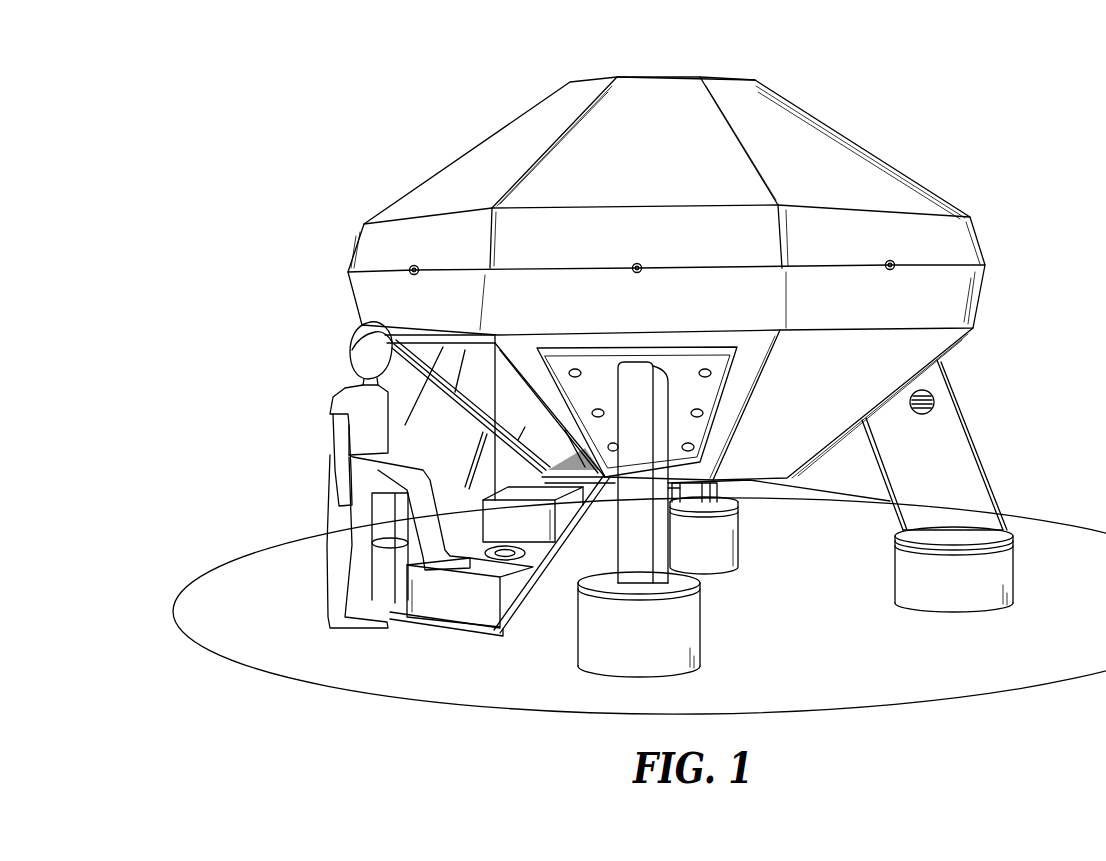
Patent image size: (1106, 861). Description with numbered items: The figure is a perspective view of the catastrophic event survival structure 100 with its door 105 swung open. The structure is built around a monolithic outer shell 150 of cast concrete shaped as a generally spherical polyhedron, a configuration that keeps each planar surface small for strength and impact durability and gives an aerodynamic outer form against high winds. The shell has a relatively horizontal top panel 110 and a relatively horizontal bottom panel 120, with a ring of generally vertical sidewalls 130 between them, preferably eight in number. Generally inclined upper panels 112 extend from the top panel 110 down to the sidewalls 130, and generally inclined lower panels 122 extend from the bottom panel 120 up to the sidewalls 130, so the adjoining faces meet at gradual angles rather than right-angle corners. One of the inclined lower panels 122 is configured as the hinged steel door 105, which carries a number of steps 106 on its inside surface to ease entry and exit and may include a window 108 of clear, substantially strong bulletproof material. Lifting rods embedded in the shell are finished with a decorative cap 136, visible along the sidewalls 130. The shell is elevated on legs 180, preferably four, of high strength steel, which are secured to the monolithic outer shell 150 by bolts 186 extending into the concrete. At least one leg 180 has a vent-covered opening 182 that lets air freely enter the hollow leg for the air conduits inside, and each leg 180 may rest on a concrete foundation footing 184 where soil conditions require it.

The catastrophic event survival structure 100 is at (206, 128).
The door 105 is at (513, 617).
The steps 106 is at (500, 528).
The window 108 is at (570, 558).
The top panel 110 is at (665, 73).
The generally inclined upper panels 112 is at (503, 143).
The bottom panel 120 is at (750, 481).
The generally inclined lower panels 122 is at (762, 338).
The generally vertical sidewalls 130 is at (390, 235).
The decorative cap 136 is at (414, 276).
The monolithic outer shell 150 is at (948, 160).
The legs 180 is at (660, 538).
The vent-covered opening 182 is at (933, 408).
The foundation footing 184 is at (702, 633).
The bolts 186 is at (710, 376).